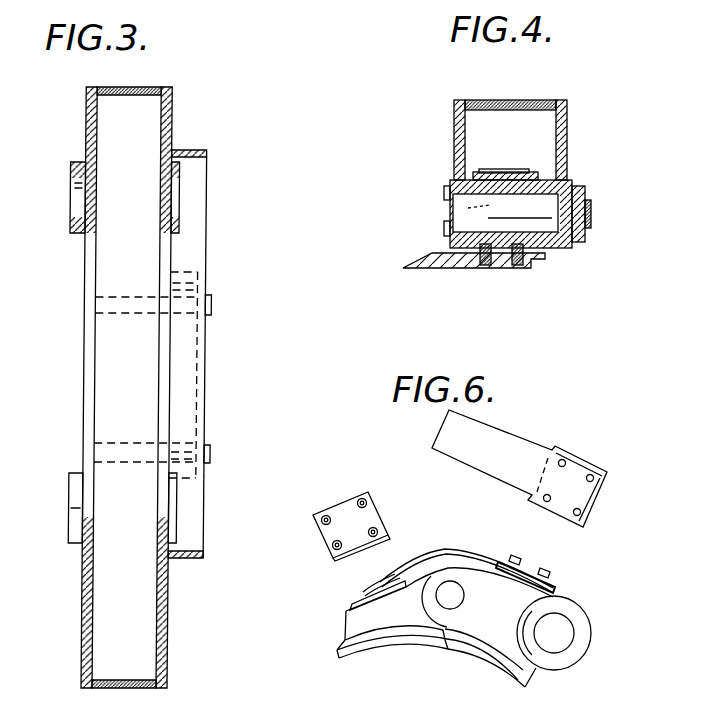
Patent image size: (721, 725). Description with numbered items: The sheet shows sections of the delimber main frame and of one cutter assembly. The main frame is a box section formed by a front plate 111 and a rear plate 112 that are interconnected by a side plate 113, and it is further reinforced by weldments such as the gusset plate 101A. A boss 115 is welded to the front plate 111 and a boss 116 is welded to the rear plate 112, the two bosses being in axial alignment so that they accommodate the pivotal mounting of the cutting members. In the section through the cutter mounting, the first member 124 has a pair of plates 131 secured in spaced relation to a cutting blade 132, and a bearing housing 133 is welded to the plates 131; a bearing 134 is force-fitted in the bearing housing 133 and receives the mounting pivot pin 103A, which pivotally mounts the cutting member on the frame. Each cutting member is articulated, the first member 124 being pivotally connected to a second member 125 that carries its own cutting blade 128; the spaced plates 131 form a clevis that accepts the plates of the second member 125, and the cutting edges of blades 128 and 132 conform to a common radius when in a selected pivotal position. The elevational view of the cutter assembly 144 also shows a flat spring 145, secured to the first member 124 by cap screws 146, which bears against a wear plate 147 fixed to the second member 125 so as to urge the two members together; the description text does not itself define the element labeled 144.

In FIG. 3, the front plate 111 is at (87, 108).
In FIG. 4, the front plate 111 is at (458, 126).
In FIG. 3, the rear plate 112 is at (167, 110).
In FIG. 4, the rear plate 112 is at (567, 130).
In FIG. 3, the side plate 113 is at (148, 87).
In FIG. 3, the boss 115 is at (75, 165).
In FIG. 4, the boss 115 is at (452, 184).
In FIG. 3, the boss 116 is at (180, 170).
In FIG. 4, the boss 116 is at (576, 186).
In FIG. 3, the gusset plate 101A is at (194, 253).
In FIG. 4, the plates 131 is at (498, 152).
In FIG. 4, the bearing housing 133 is at (503, 177).
In FIG. 4, the bearing 134 is at (478, 199).
In FIG. 4, the mounting pivot pin 103A is at (480, 210).
In FIG. 4, the cutting blade 132 is at (528, 261).
In FIG. 6, the cutting blade 132 is at (508, 667).
In FIG. 6, the flat spring 145 is at (485, 443).
In FIG. 6, the cap screws 146 is at (583, 510).
In FIG. 6, the wear plate 147 is at (347, 515).
In FIG. 6, the second member 125 is at (437, 628).
In FIG. 6, the cutting blade 128 is at (392, 671).
In FIG. 6, the first member 124 is at (507, 635).
In FIG. 6, the bracket body 144 is at (443, 646).